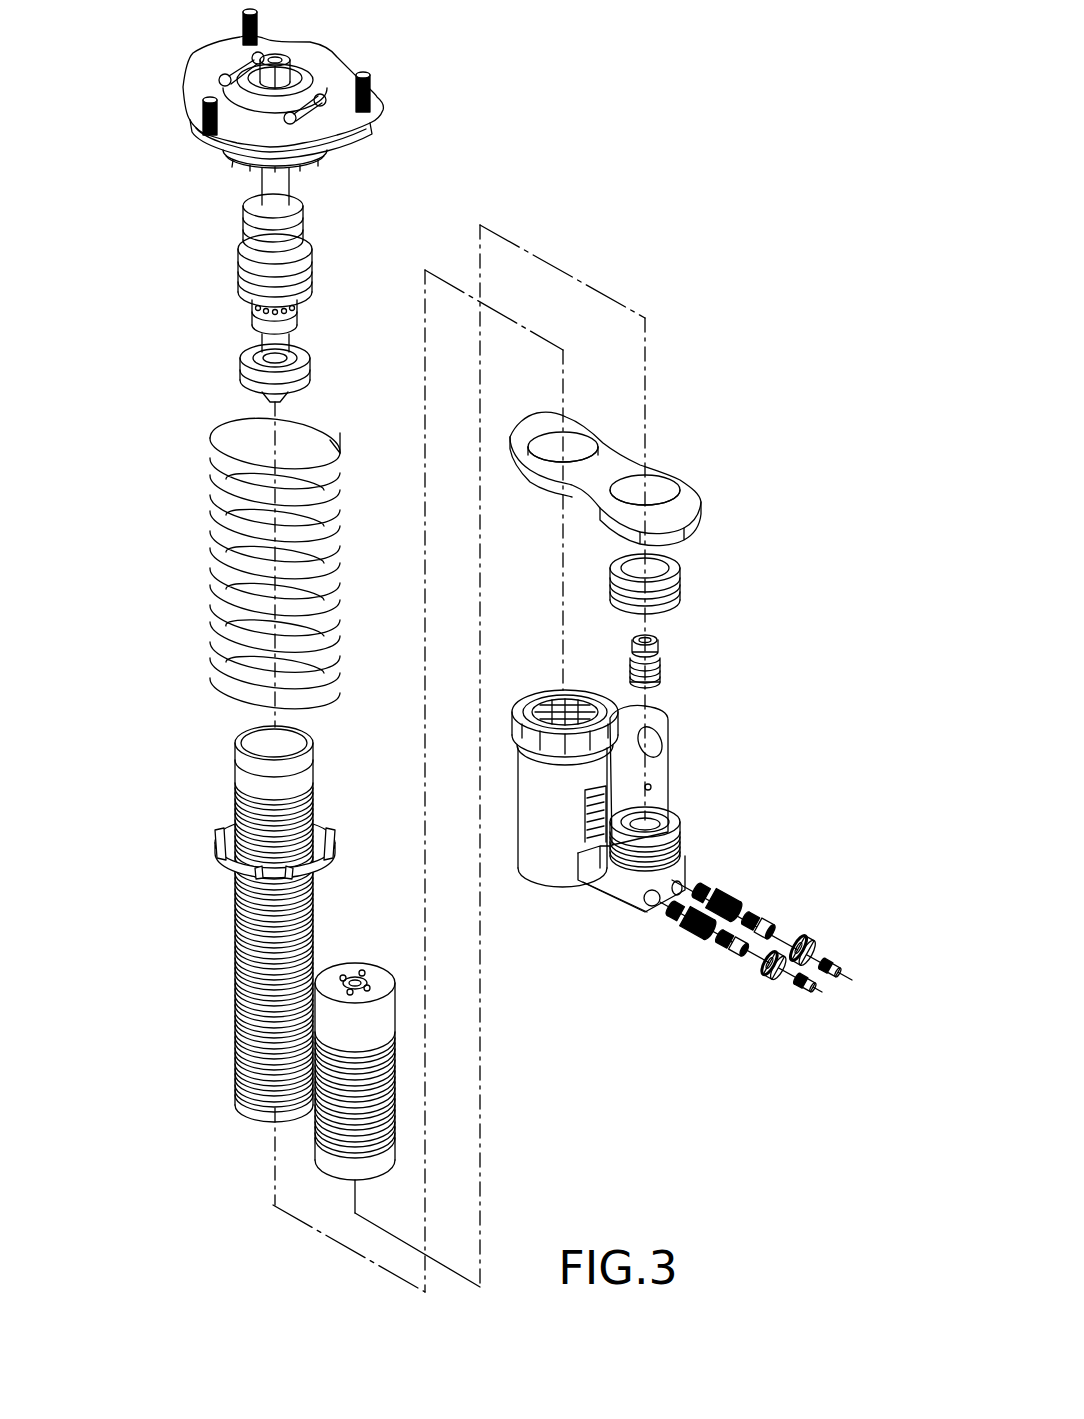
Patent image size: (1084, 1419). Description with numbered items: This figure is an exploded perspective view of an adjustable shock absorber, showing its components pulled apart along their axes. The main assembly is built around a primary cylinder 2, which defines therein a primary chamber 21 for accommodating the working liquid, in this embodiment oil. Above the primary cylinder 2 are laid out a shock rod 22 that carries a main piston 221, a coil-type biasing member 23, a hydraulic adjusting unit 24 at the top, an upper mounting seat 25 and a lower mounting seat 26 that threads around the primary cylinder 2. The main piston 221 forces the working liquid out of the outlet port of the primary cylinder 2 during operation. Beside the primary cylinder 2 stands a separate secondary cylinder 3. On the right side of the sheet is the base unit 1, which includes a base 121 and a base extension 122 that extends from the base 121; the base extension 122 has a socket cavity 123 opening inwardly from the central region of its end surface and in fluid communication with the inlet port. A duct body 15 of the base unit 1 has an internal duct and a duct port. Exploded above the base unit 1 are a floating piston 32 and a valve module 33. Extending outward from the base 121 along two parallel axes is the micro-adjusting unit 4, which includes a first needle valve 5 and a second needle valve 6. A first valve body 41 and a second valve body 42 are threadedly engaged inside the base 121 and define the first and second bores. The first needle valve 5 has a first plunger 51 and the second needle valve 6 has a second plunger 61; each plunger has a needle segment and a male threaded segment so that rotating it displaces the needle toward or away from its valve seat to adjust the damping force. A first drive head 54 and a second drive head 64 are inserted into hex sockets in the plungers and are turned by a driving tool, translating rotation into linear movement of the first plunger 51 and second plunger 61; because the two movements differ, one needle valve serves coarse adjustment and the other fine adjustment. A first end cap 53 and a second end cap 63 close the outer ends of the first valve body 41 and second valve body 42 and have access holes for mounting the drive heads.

The base unit 1 is at (673, 859).
The primary cylinder 2 is at (214, 923).
The secondary cylinder 3 is at (372, 963).
The micro-adjusting unit 4 is at (754, 920).
The first needle valve 5 is at (818, 964).
The second needle valve 6 is at (768, 1022).
The duct body 15 is at (597, 808).
The primary chamber 21 is at (256, 748).
The shock rod 22 is at (246, 268).
The biasing member 23 is at (215, 520).
The hydraulic adjusting unit 24 is at (283, 68).
The upper mounting seat 25 is at (309, 107).
The lower mounting seat 26 is at (215, 805).
The floating piston 32 is at (683, 590).
The valve module 33 is at (664, 652).
The first valve body 41 is at (725, 895).
The second valve body 42 is at (688, 930).
The first plunger 51 is at (765, 922).
The first end cap 53 is at (812, 952).
The first drive head 54 is at (833, 982).
The second plunger 61 is at (735, 948).
The second end cap 63 is at (774, 980).
The second drive head 64 is at (800, 998).
The base 121 is at (628, 890).
The base extension 122 is at (683, 838).
The socket cavity 123 is at (650, 828).
The main piston 221 is at (245, 380).